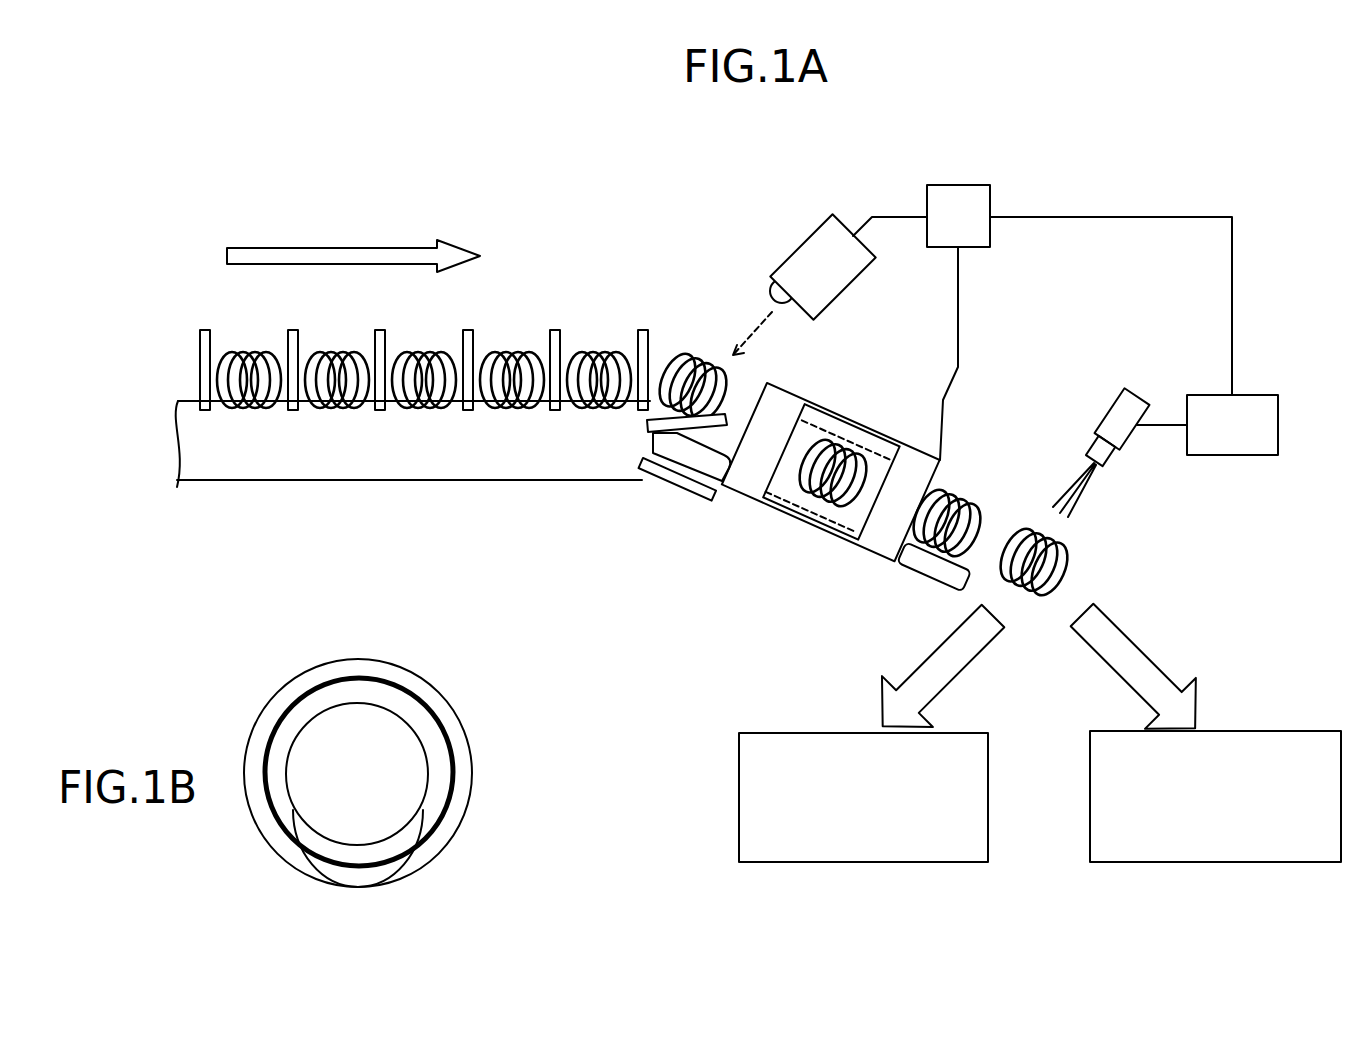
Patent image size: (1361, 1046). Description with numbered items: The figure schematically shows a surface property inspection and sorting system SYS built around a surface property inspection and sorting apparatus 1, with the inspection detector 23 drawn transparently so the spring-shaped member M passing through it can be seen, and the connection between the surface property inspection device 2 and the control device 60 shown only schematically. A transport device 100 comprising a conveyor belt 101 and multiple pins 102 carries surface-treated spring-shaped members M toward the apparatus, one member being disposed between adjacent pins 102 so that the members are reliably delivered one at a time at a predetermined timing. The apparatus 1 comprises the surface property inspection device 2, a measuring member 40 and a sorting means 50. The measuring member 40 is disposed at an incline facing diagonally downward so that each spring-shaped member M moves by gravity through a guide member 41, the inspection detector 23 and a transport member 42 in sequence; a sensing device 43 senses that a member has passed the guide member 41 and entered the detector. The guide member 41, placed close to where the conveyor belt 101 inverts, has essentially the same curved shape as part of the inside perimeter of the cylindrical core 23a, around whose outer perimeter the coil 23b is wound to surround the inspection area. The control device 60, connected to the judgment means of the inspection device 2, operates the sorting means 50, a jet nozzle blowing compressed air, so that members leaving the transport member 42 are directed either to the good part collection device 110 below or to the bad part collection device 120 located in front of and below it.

In FIG. 1A, the surface property inspection and sorting apparatus 1 is at (1088, 183).
In FIG. 1A, the surface property inspection and sorting system SYS is at (1237, 192).
In FIG. 1A, the surface property inspection device 2 is at (960, 185).
In FIG. 1A, the transport device 100 is at (498, 183).
In FIG. 1A, the conveyor belt 101 is at (190, 401).
In FIG. 1A, the pins 102 is at (213, 338).
In FIG. 1A, the measuring member 40 is at (861, 357).
In FIG. 1A, the guide member 41 is at (692, 455).
In FIG. 1B, the guide member 41 is at (360, 863).
In FIG. 1A, the transport member 42 is at (930, 568).
In FIG. 1A, the sensing device 43 is at (808, 255).
In FIG. 1A, the inspection detector 23 is at (876, 430).
In FIG. 1B, the inspection detector 23 is at (437, 670).
In FIG. 1A, the core 23a is at (790, 483).
In FIG. 1B, the core 23a is at (360, 693).
In FIG. 1A, the coil 23b is at (803, 503).
In FIG. 1B, the coil 23b is at (445, 740).
In FIG. 1A, the spring-shaped member M is at (842, 443).
In FIG. 1A, the sorting means 50 is at (1135, 403).
In FIG. 1A, the control device 60 is at (1280, 432).
In FIG. 1A, the good part collection device 110 is at (1206, 863).
In FIG. 1A, the bad part collection device 120 is at (855, 863).